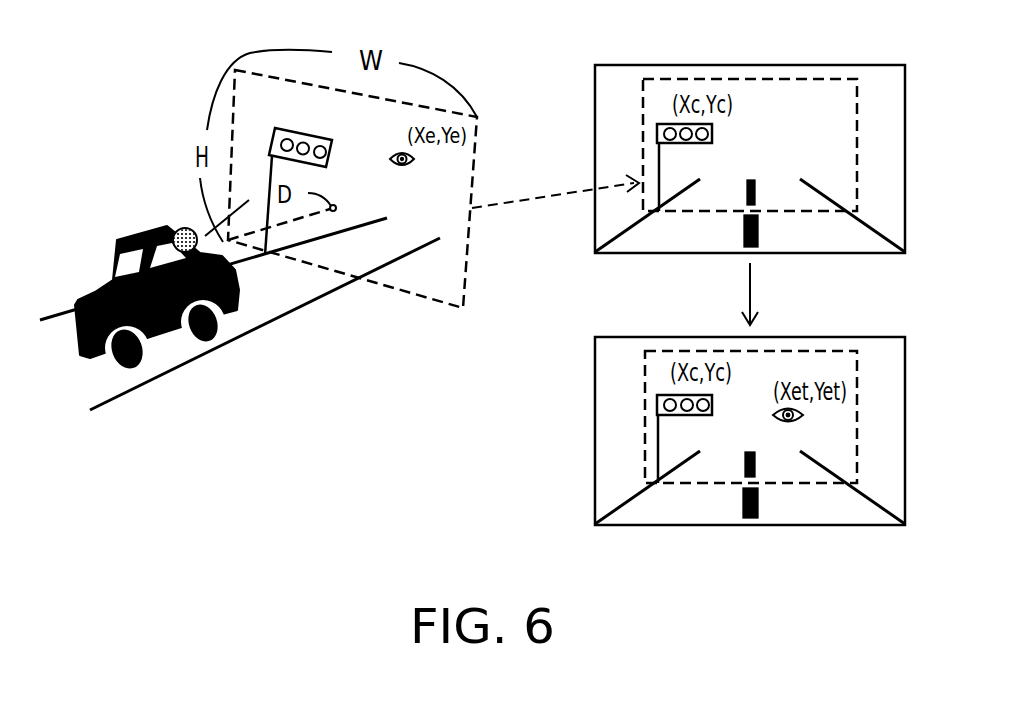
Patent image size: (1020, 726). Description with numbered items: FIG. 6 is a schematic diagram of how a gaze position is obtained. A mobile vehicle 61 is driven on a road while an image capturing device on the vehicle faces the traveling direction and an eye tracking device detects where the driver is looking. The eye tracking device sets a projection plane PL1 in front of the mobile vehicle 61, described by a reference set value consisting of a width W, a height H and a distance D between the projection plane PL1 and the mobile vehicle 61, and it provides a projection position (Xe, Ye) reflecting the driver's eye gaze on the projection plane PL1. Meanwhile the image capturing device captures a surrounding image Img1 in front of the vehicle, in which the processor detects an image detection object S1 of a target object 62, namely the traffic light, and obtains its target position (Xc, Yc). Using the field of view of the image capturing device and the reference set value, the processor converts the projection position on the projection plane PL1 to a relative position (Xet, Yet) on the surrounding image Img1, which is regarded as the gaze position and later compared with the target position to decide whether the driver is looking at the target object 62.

The mobile vehicle 61 is at (140, 232).
The target object 62 is at (300, 130).
The image detection object S1 is at (668, 125).
The projection plane PL1 is at (477, 165).
The surrounding image Img1 is at (832, 79).